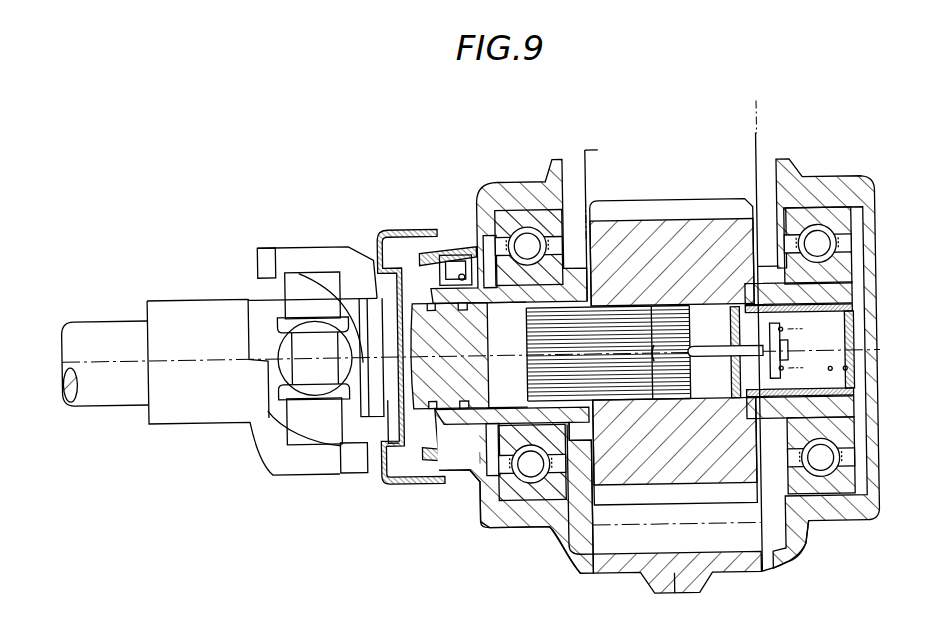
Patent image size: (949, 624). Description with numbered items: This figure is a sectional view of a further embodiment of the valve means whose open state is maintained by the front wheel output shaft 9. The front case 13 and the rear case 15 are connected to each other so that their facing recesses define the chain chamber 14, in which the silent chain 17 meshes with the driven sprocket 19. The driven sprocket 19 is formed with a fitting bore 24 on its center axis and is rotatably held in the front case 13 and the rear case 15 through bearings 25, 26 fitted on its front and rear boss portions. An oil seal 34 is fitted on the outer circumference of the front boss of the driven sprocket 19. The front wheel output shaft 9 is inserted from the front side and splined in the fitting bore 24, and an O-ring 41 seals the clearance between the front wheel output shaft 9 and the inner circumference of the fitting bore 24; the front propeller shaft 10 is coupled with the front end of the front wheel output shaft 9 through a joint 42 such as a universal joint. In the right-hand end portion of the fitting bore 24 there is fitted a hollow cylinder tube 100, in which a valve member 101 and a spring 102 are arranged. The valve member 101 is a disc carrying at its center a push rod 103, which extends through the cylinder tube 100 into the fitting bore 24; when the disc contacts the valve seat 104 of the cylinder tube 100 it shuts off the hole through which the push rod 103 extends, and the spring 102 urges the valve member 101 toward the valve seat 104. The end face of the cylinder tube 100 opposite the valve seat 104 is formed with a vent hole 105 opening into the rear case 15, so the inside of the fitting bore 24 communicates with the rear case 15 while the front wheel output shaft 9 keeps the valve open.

The front propeller shaft 10 is at (96, 383).
The joint 42 is at (303, 472).
The front wheel output shaft 9 is at (418, 415).
The oil seal 34 is at (409, 238).
The O-ring 41 is at (462, 249).
The bearing 25 is at (510, 223).
The chain chamber 14 is at (578, 166).
The silent chain 17 is at (758, 137).
The bearing 26 is at (845, 222).
The hollow cylinder tube 100 is at (855, 325).
The vent hole 105 is at (856, 355).
The spring 102 is at (830, 375).
The push rod 103 is at (700, 350).
The valve seat 104 is at (700, 378).
The valve member 101 is at (741, 378).
The fitting bore 24 is at (685, 407).
The driven sprocket 19 is at (566, 521).
The front case 13 is at (635, 565).
The rear case 15 is at (767, 569).